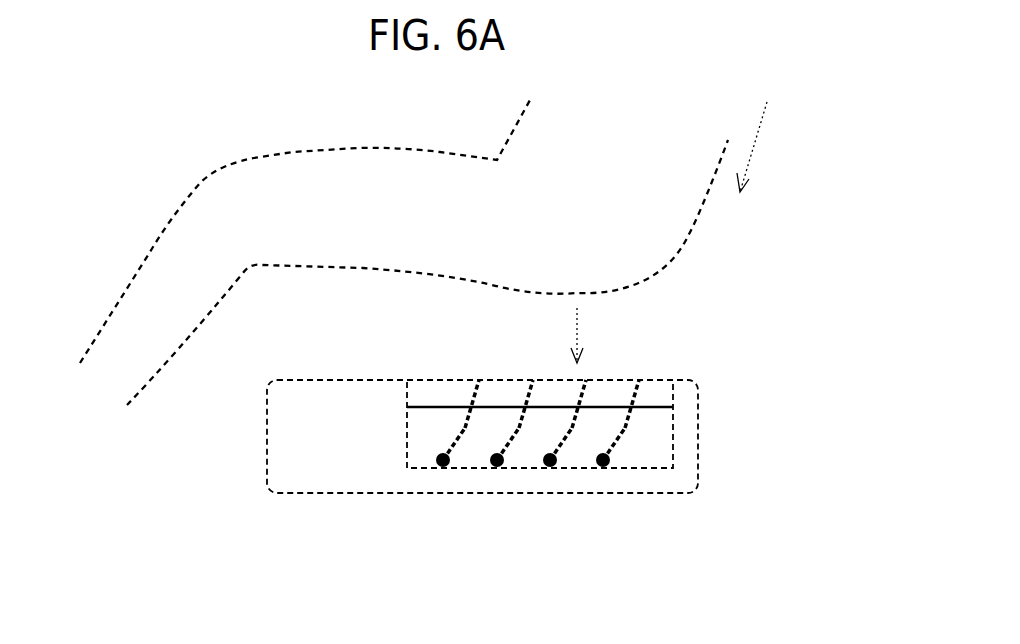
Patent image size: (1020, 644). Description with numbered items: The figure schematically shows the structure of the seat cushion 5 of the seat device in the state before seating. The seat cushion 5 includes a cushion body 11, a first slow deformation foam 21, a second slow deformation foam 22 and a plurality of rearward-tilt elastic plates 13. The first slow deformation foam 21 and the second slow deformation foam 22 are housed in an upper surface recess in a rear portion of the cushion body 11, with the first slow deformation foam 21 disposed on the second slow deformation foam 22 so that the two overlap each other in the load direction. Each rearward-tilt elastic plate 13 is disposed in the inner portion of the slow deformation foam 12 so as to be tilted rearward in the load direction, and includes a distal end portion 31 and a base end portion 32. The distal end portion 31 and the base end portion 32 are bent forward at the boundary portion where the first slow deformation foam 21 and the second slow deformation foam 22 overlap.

The seat cushion 5 is at (237, 492).
The cushion body 11 is at (295, 487).
The slow deformation foam 12 is at (532, 491).
The rearward-tilt elastic plate 13 is at (624, 469).
The first slow deformation foam 21 is at (439, 395).
The second slow deformation foam 22 is at (470, 443).
The distal end portion 31 is at (637, 388).
The base end portion 32 is at (620, 427).